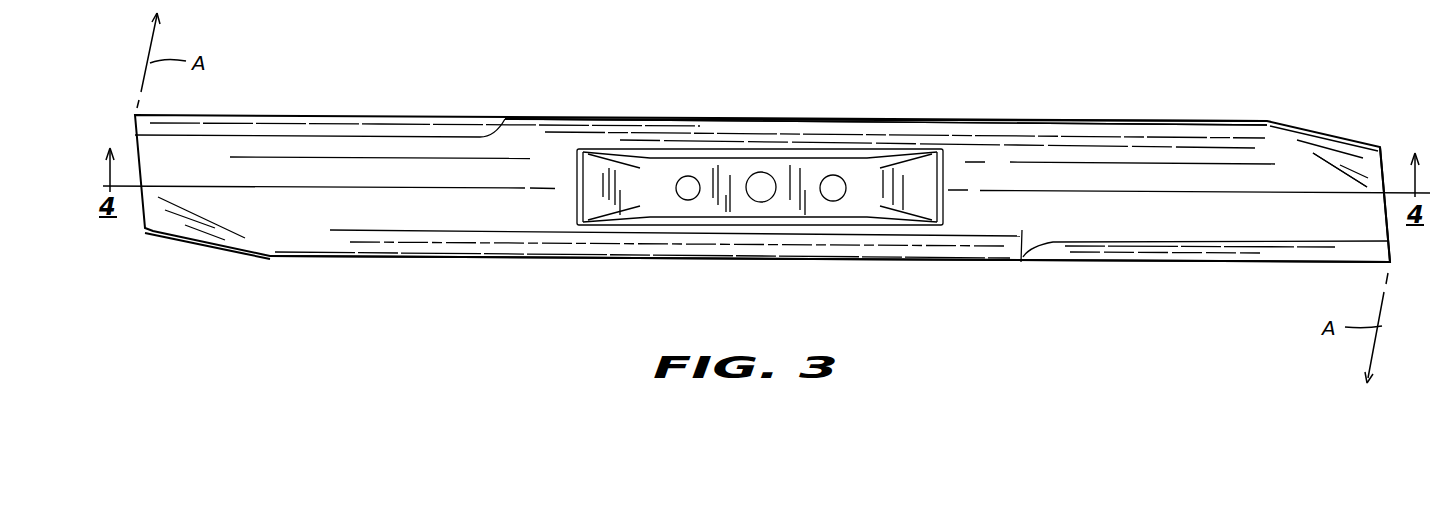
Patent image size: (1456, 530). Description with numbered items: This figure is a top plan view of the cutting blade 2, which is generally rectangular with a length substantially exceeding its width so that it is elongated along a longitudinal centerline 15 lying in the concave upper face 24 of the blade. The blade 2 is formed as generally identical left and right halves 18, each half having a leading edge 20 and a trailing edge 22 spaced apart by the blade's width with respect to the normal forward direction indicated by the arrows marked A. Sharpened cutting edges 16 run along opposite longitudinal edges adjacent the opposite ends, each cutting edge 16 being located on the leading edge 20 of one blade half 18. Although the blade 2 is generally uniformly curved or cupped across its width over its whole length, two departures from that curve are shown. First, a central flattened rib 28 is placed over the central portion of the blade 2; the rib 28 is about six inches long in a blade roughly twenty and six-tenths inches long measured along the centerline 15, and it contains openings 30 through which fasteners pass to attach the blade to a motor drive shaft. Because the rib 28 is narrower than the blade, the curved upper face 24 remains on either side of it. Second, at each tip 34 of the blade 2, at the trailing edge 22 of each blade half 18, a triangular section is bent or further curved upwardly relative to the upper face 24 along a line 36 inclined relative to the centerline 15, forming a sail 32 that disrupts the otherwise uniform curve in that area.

The cutting blade 2 is at (1083, 100).
The longitudinal centerline 15 is at (1130, 192).
The cutting edge 16 is at (374, 125).
The blade half 18 is at (352, 213).
The leading edge 20 is at (535, 117).
The trailing edge 22 is at (435, 257).
The upper face 24 is at (1021, 262).
The central flattened rib 28 is at (732, 177).
The opening 30 is at (831, 185).
The sail 32 is at (197, 240).
The tip 34 is at (1387, 163).
The line 36 is at (1315, 155).